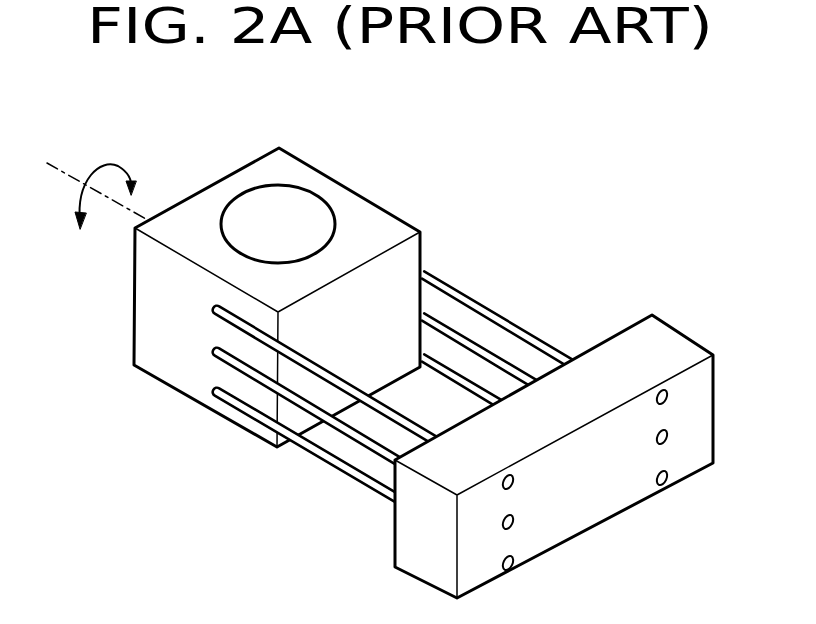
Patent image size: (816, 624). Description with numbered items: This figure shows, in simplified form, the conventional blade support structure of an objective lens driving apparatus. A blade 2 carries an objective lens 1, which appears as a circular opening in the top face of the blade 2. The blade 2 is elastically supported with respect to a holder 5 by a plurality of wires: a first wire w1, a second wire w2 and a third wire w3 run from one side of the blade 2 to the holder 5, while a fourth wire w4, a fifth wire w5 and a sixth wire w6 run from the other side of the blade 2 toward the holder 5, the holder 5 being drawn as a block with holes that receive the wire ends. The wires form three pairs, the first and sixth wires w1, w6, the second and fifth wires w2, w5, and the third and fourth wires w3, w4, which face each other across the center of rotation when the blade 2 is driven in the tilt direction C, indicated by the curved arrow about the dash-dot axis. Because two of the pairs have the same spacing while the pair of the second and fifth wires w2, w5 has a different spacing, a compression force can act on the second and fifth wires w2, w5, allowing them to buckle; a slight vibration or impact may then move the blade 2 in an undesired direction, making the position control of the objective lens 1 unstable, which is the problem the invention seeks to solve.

The objective lens 1 is at (300, 210).
The blade 2 is at (368, 212).
The tilt direction C is at (110, 162).
The first wire w1 is at (455, 288).
The second wire w2 is at (473, 345).
The third wire w3 is at (482, 390).
The fourth wire w4 is at (283, 357).
The fifth wire w5 is at (315, 405).
The sixth wire w6 is at (360, 475).
The holder 5 is at (590, 507).